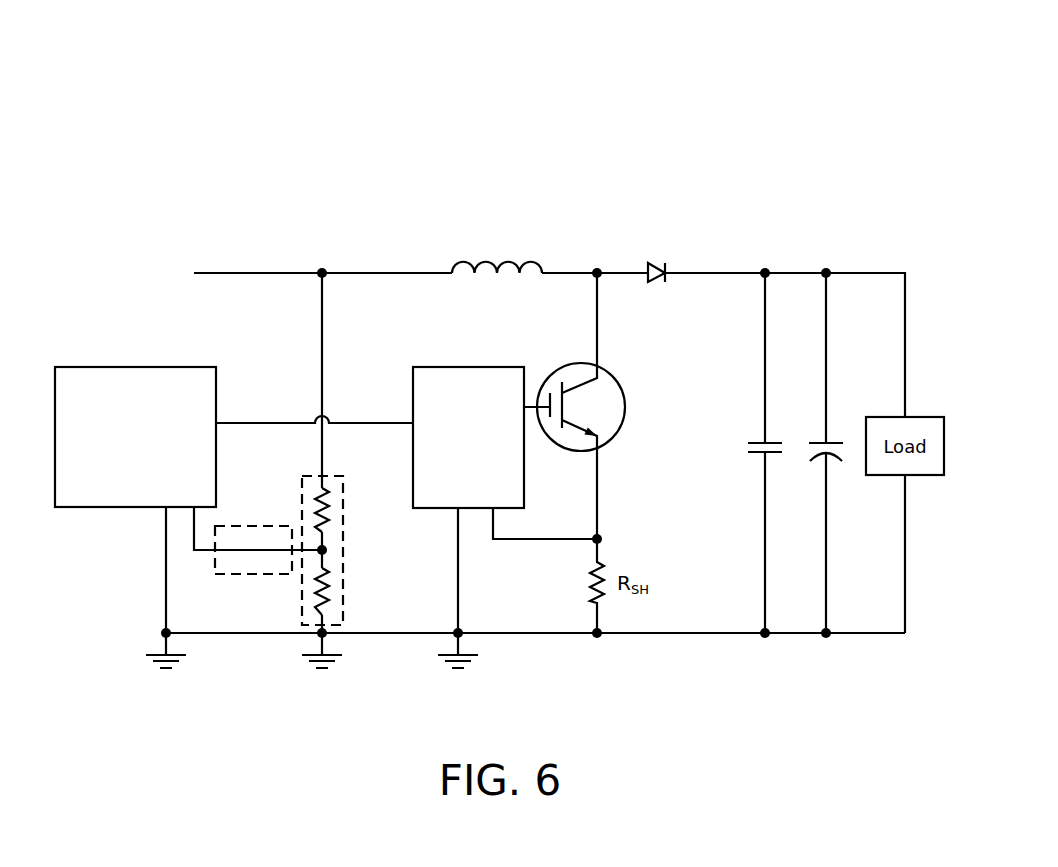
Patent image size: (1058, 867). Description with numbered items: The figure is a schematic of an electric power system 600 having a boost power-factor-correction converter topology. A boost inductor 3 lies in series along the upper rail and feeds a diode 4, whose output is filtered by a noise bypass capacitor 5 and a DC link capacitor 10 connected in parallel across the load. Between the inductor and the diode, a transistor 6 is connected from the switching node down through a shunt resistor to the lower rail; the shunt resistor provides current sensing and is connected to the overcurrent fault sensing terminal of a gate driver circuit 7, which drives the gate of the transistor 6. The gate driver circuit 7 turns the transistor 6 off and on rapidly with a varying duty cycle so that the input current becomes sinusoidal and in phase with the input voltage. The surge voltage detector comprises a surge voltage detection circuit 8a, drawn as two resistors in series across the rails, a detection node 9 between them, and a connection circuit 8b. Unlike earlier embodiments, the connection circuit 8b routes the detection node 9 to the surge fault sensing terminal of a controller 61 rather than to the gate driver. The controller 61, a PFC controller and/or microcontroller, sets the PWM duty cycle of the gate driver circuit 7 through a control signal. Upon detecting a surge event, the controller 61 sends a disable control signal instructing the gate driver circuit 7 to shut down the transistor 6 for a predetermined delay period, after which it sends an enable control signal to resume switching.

The electric power system 600 is at (773, 72).
The controller 61 is at (133, 367).
The gate driver circuit 7 is at (470, 367).
The boost inductor 3 is at (485, 260).
The diode 4 is at (653, 263).
The transistor 6 is at (625, 407).
The noise bypass capacitor 5 is at (752, 441).
The DC link capacitor 10 is at (815, 441).
The detection node 9 is at (340, 550).
The surge voltage detection circuit 8a is at (345, 600).
The connection circuit 8b is at (235, 575).